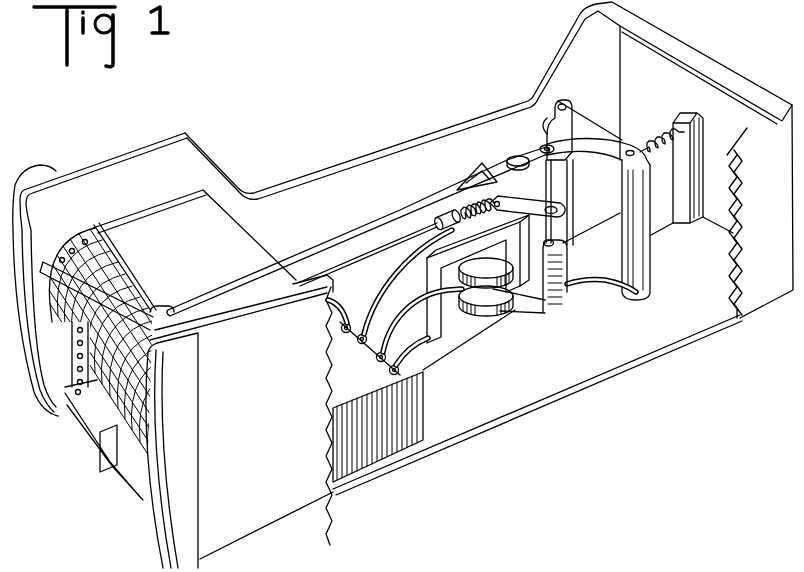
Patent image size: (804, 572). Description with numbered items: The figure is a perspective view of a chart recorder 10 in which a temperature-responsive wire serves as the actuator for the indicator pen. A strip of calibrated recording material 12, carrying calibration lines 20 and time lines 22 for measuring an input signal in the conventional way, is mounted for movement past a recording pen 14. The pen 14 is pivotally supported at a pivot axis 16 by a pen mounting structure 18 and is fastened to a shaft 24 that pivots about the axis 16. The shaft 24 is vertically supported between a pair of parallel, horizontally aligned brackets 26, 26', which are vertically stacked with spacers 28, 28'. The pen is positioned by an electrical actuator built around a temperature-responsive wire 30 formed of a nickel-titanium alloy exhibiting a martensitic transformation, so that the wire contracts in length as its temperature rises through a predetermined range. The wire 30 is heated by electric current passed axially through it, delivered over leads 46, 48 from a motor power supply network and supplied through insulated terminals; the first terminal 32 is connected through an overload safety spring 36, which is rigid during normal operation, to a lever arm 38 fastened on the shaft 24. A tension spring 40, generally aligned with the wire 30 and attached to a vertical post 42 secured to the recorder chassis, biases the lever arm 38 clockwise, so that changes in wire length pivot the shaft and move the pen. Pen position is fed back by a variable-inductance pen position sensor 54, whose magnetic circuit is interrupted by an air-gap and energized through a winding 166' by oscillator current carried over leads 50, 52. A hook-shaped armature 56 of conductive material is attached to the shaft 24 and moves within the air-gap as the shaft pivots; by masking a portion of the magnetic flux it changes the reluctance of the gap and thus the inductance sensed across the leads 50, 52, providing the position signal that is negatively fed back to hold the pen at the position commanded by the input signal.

The chart recorder 10 is at (403, 285).
The strip of calibrated recording material 12 is at (77, 363).
The recording pen 14 is at (337, 238).
The pivot axis 16 is at (540, 148).
The pen mounting structure 18 is at (602, 112).
The calibration lines 20 is at (139, 290).
The time lines 22 is at (120, 258).
The shaft 24 is at (570, 246).
The bracket 26 is at (565, 114).
The bracket 26' is at (601, 299).
The spacer 28 is at (569, 116).
The spacer 28' is at (657, 230).
The temperature-responsive wire 30 is at (338, 266).
The first terminal 32 is at (436, 221).
The overload safety spring 36 is at (480, 207).
The lever arm 38 is at (524, 203).
The tension spring 40 is at (652, 138).
The vertical post 42 is at (703, 147).
The lead 46 is at (393, 275).
The lead 48 is at (333, 322).
The lead 50 is at (406, 313).
The lead 52 is at (419, 357).
The pen position sensor 54 is at (484, 353).
The hook-shaped armature 56 is at (557, 303).
The winding 166' is at (501, 303).